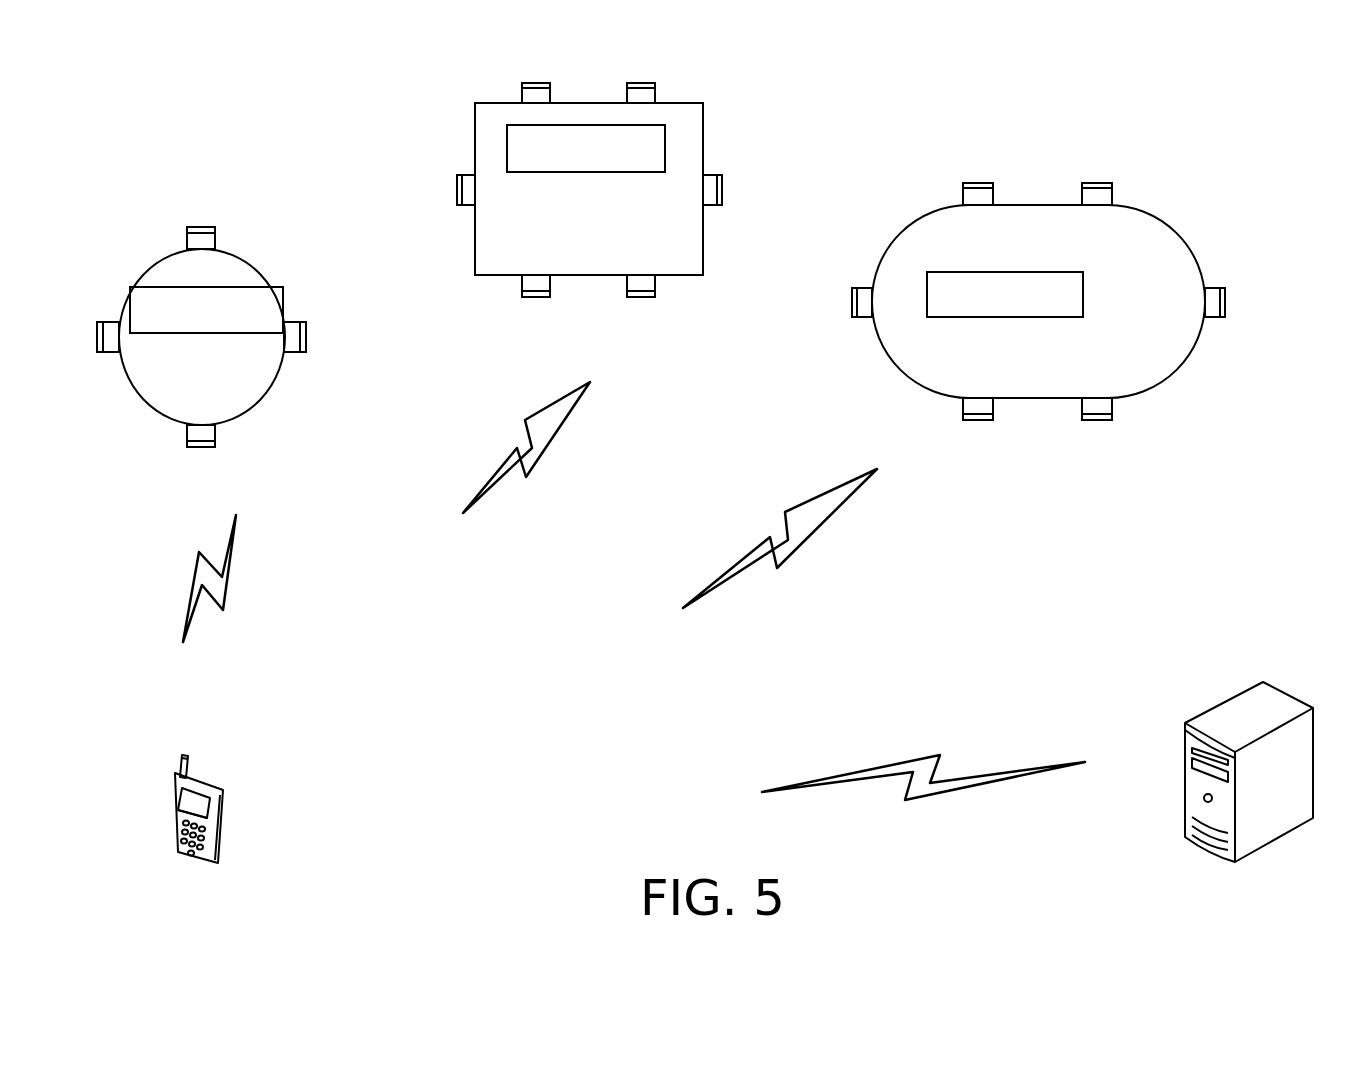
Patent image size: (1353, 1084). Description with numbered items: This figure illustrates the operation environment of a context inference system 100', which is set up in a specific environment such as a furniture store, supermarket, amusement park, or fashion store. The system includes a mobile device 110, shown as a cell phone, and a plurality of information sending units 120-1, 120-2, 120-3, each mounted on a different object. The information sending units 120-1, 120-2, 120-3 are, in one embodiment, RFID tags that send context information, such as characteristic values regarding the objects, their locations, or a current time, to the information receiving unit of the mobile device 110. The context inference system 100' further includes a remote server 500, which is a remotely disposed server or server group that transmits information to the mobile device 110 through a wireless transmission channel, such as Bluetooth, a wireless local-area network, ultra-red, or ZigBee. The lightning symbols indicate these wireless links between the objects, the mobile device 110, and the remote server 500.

The context inference system 100' is at (718, 469).
The mobile device 110 is at (227, 830).
The information sending unit 120-1 is at (257, 290).
The information sending unit 120-2 is at (660, 143).
The information sending unit 120-3 is at (1078, 287).
The remote server 500 is at (1223, 692).